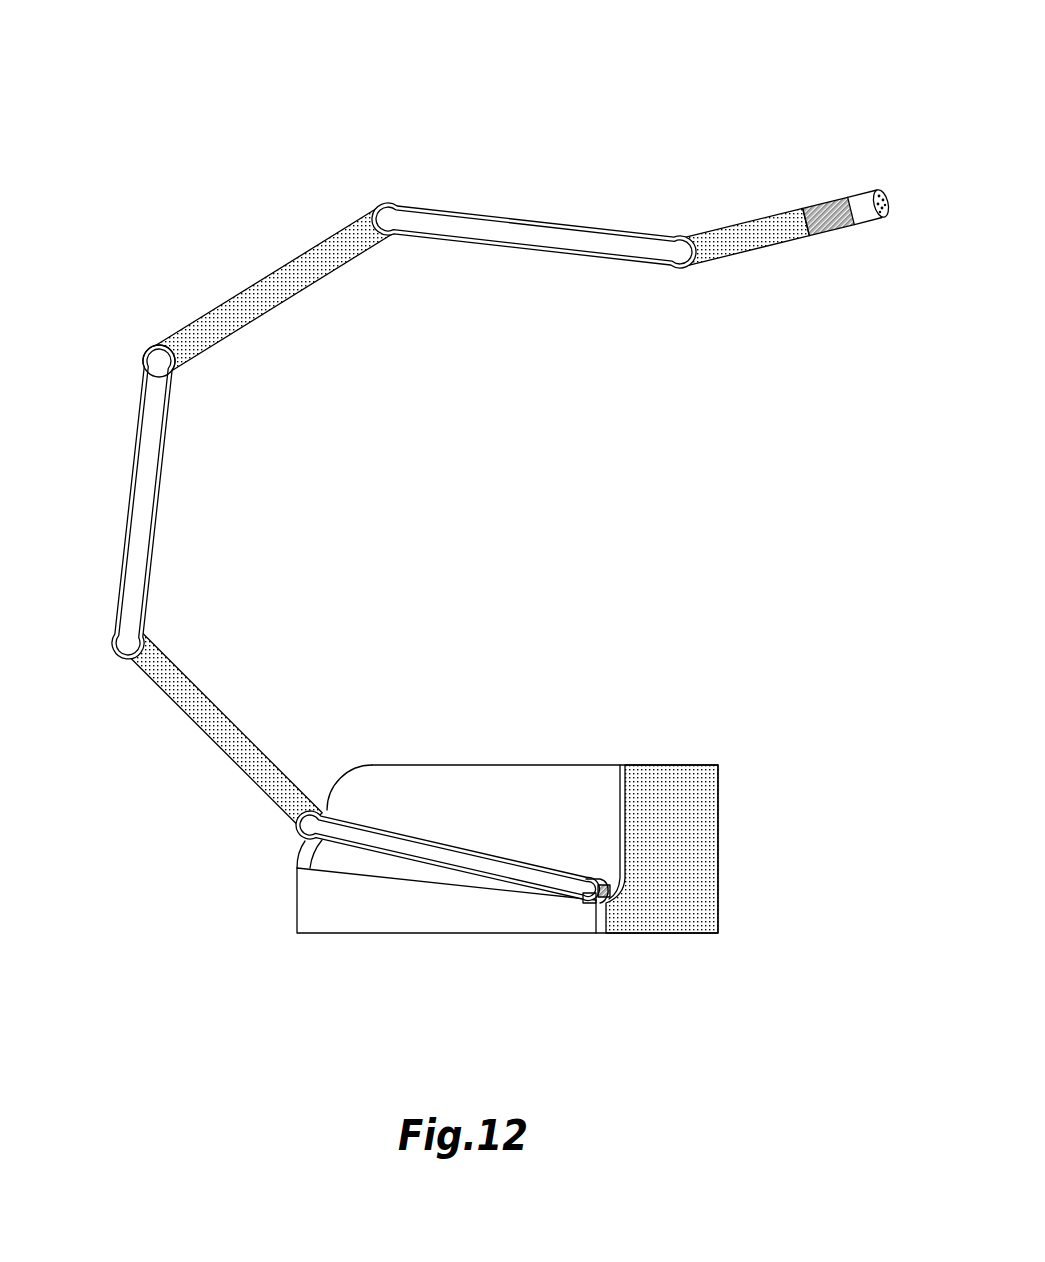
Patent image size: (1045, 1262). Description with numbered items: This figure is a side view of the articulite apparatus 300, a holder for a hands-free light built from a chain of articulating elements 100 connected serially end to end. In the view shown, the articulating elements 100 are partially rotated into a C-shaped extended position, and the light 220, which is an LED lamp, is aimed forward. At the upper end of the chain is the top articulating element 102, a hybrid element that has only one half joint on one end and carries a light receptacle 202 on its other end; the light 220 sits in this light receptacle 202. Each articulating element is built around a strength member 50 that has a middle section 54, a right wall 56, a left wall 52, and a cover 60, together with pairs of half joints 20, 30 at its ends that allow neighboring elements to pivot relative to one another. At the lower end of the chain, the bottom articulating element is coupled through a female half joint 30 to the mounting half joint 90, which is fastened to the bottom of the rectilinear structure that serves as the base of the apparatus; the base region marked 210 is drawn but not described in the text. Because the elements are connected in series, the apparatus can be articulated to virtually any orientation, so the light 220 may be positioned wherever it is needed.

The articulite apparatus 300 is at (428, 107).
The articulating elements 100 is at (299, 316).
The top articulating element 102 is at (706, 234).
The light receptacle 202 is at (815, 214).
The light 220 is at (878, 178).
The strength member 50 is at (255, 284).
The left wall 52 is at (156, 591).
The middle section 54 is at (221, 722).
The right wall 56 is at (125, 581).
The cover 60 is at (556, 238).
The half joint 20 is at (298, 856).
The female half joint 30 is at (585, 899).
The mounting half joint 90 is at (603, 904).
The housing 210 is at (507, 849).